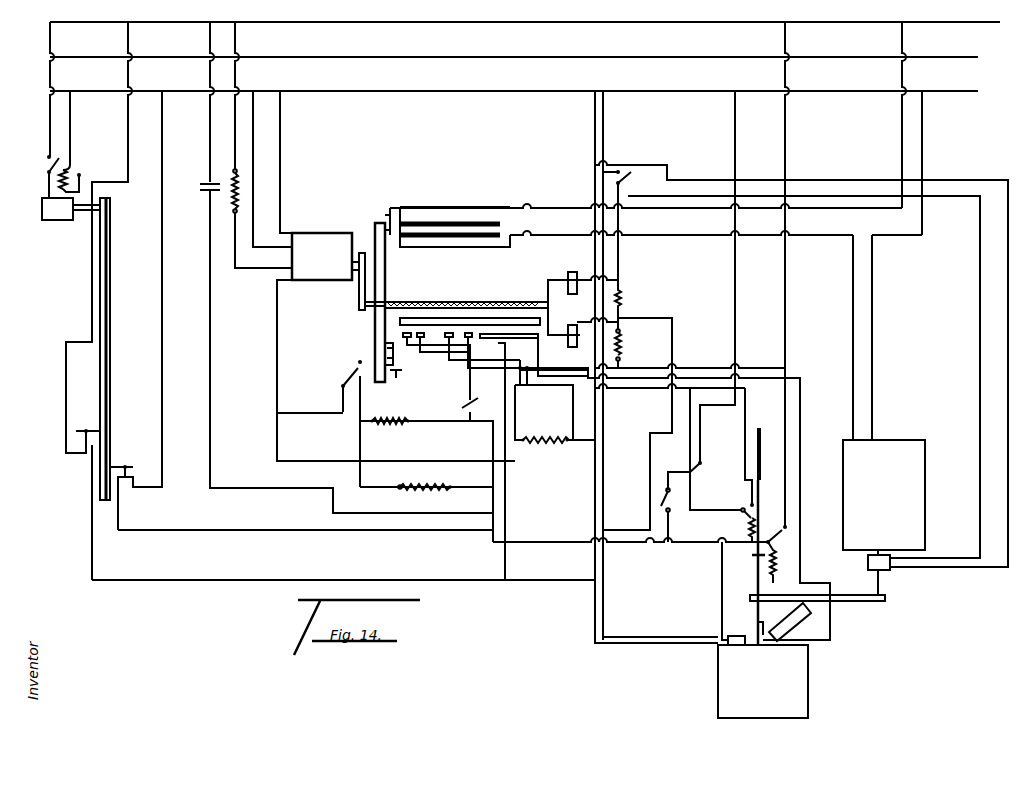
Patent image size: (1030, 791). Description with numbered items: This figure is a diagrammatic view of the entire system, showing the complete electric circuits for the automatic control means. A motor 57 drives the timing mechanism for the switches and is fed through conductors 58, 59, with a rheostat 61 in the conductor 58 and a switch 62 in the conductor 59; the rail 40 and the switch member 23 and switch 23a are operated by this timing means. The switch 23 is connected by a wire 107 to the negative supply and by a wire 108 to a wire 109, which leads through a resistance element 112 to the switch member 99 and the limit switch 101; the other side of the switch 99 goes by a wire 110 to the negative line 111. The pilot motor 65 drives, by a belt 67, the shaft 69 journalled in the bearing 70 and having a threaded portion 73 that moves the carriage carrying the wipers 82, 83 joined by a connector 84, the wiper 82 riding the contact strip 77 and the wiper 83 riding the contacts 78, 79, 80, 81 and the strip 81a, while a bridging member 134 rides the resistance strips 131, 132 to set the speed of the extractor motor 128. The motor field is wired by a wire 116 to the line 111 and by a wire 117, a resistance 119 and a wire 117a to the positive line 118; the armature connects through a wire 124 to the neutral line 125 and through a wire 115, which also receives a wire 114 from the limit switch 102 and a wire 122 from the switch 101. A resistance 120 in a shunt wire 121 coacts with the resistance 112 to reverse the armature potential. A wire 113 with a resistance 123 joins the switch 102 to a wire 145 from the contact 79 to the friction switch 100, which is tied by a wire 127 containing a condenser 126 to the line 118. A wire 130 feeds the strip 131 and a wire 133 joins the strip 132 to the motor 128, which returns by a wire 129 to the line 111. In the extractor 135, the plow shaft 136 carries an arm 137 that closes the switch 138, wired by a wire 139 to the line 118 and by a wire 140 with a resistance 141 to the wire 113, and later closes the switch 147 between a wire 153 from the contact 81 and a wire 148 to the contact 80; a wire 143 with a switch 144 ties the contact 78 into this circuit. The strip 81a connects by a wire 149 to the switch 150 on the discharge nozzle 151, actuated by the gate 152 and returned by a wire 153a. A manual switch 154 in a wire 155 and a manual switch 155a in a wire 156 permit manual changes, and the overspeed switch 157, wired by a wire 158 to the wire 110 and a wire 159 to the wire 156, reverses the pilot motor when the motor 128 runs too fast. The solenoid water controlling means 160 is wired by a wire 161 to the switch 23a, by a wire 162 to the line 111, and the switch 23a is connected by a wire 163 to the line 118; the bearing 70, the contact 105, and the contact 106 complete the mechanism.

The positive line 118 is at (713, 22).
The neutral line 125 is at (326, 53).
The wire 117 is at (242, 42).
The wire 117a is at (235, 255).
The conductor 59 is at (48, 128).
The conductor 58 is at (72, 136).
The switch 62 is at (45, 166).
The rheostat 61 is at (73, 168).
The motor 57 is at (42, 212).
The wire 163 is at (90, 264).
The rail 40 is at (100, 312).
The wire 107 is at (162, 279).
The condenser 126 is at (207, 178).
The resistance 119 is at (233, 175).
The wire 116 is at (255, 165).
The wire 124 is at (282, 168).
The wire 127 is at (178, 250).
The bearing 70 is at (373, 226).
The pilot motor 65 is at (322, 256).
The belt 67 is at (359, 288).
The bridging member 134 is at (392, 214).
The resistance strip 131 is at (437, 218).
The resistance strip 132 is at (510, 222).
The wire 110 is at (598, 157).
The negative line 111 is at (670, 96).
The manually operable switch 155a is at (634, 172).
The wire 130 is at (848, 198).
The wire 156 is at (626, 213).
The wire 133 is at (812, 238).
The contact 78 is at (405, 316).
The threaded portion 73 is at (445, 316).
The contact member 79 is at (466, 316).
The contact 80 is at (470, 316).
The contact strip 77 is at (478, 316).
The contact 81 is at (503, 316).
The contact strip 81a is at (522, 342).
The connector 84 is at (383, 345).
The wiper 83 is at (385, 342).
The wiper 82 is at (385, 358).
The contact 105 is at (360, 362).
The limit switch 102 is at (342, 386).
The wire 114 is at (307, 412).
The wire 115 is at (277, 374).
The contact 106 is at (394, 379).
The wire 143 is at (435, 380).
The switch 144 is at (430, 404).
The wire 145 is at (500, 372).
The limit switch 101 is at (530, 380).
The resistance 120 is at (544, 414).
The shunt wire 121 is at (578, 452).
The wire 122 is at (400, 461).
The resistance 141 is at (386, 426).
The resistance 123 is at (416, 487).
The wire 113 is at (604, 463).
The switch member 99 is at (604, 281).
The shaft 69 is at (571, 307).
The wire 109 is at (622, 301).
The friction switch 100 is at (606, 322).
The resistance element 112 is at (620, 352).
The wire 153 is at (645, 392).
The wire 149 is at (706, 375).
The wire 139 is at (783, 320).
The wire 129 is at (874, 293).
The wire 159 is at (978, 310).
The wire 158 is at (1006, 362).
The extractor motor 128 is at (908, 448).
The wire 148 is at (749, 416).
The plow shaft 136 is at (757, 446).
The wire 155 is at (684, 471).
The manually operable switch 154 is at (662, 503).
The switch 147 is at (742, 506).
The wire 153a is at (728, 530).
The switch member 138 is at (780, 536).
The arm 137 is at (752, 558).
The overspeed switch 157 is at (888, 570).
The wire 108 is at (216, 531).
The wire 140 is at (550, 544).
The wire 162 is at (606, 581).
The wire 161 is at (540, 582).
The gate 152 is at (757, 624).
The discharge nozzle 151 is at (820, 610).
The switch 150 is at (800, 638).
The solenoid operated water controlling means 160 is at (728, 644).
The extractor 135 is at (718, 678).
The switch 23a is at (78, 434).
The switch member 23 is at (127, 464).